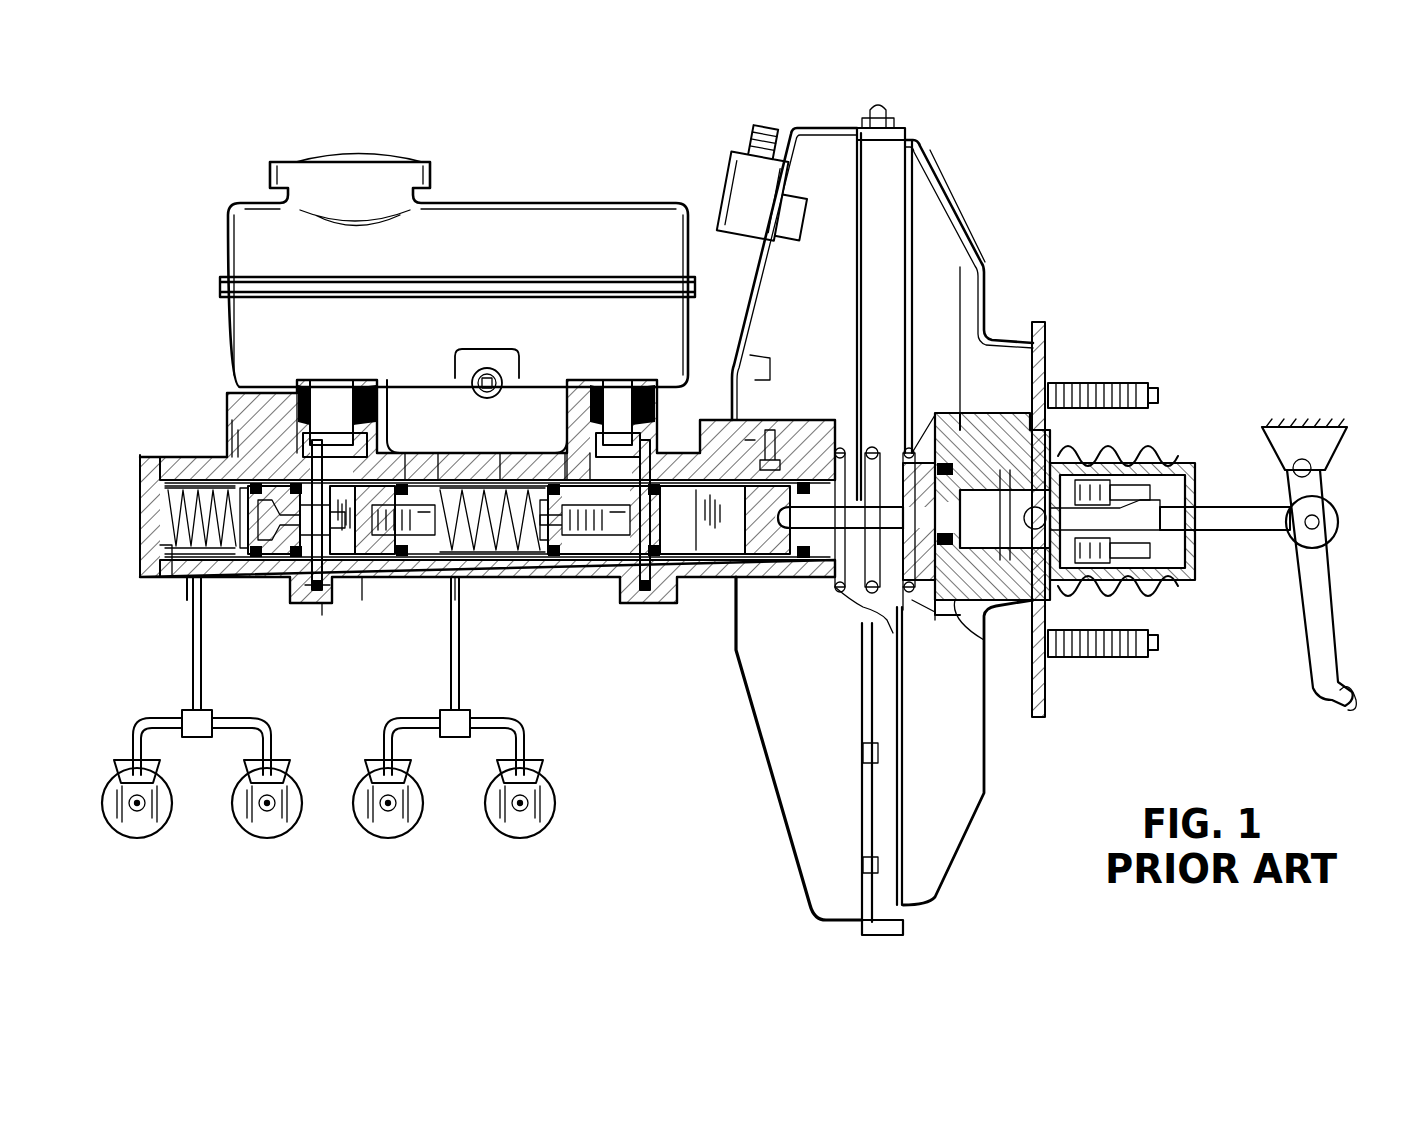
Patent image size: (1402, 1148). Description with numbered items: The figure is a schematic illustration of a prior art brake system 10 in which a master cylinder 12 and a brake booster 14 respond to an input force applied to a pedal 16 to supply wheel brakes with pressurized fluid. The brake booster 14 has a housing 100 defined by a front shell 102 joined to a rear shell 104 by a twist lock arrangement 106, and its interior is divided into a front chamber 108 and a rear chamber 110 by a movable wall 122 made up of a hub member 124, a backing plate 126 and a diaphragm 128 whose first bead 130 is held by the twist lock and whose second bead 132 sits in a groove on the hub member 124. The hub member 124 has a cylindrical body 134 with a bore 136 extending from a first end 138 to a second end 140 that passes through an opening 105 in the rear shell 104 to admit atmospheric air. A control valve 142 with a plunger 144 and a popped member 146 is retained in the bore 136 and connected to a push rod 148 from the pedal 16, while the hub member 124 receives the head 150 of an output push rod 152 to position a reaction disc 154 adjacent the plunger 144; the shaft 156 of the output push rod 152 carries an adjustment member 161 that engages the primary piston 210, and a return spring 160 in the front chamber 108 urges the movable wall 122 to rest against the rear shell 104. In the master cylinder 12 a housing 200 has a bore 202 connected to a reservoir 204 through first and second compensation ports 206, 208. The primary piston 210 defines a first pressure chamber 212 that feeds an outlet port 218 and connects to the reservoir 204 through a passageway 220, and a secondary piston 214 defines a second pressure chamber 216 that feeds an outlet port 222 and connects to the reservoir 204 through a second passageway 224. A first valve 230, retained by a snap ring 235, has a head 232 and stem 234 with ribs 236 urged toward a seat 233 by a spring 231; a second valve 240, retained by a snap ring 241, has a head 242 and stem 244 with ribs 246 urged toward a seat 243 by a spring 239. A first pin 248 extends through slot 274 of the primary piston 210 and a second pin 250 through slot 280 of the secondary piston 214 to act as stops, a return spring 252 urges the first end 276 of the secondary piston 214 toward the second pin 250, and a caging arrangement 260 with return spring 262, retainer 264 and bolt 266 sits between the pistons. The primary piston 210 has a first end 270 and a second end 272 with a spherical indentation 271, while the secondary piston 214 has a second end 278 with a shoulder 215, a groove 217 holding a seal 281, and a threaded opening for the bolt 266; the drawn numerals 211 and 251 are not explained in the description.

The brake system 10 is at (415, 850).
The master cylinder 12 is at (128, 373).
The brake booster 14 is at (1136, 252).
The pedal 16 is at (1318, 577).
The housing 100 is at (886, 514).
The front shell 102 is at (778, 128).
The rear shell 104 is at (957, 187).
The opening 105 is at (1092, 442).
The twist lock arrangement 106 is at (850, 107).
The front chamber 108 is at (790, 305).
The rear chamber 110 is at (978, 283).
The movable wall 122 is at (855, 256).
The hub member 124 is at (949, 638).
The backing plate 126 is at (972, 669).
The diaphragm 128 is at (895, 133).
The first bead 130 is at (893, 125).
The second bead 132 is at (1030, 689).
The cylindrical body 134 is at (1147, 463).
The bore 136 is at (1100, 560).
The first end 138 is at (910, 658).
The second end 140 is at (1193, 463).
The control valve 142 is at (1160, 597).
The plunger 144 is at (1036, 440).
The popped member 146 is at (1178, 462).
The push rod 148 is at (1257, 530).
The head 150 is at (925, 430).
The output push rod 152 is at (858, 462).
The reaction disc 154 is at (906, 615).
The shaft 156 is at (809, 560).
The return spring 160 is at (790, 450).
The adjustment member 161 is at (762, 568).
The housing 200 is at (392, 578).
The bore 202 is at (590, 578).
The reservoir 204 is at (243, 322).
The first compensation port 206 is at (690, 428).
The second compensation port 208 is at (382, 398).
The primary piston 210 is at (740, 580).
The primary piston 211 is at (655, 500).
The first pressure chamber 212 is at (488, 662).
The secondary piston 214 is at (362, 580).
The shoulder 215 is at (428, 580).
The second pressure chamber 216 is at (210, 660).
The groove 217 is at (440, 590).
The outlet port 218 is at (462, 580).
The passageway 220 is at (646, 600).
The outlet port 222 is at (187, 578).
The second passageway 224 is at (237, 437).
The first valve 230 is at (562, 517).
The spring 231 is at (583, 562).
The head 232 is at (603, 565).
The seat 233 is at (612, 580).
The stem 234 is at (660, 521).
The snap ring 235 is at (567, 453).
The ribs 236 is at (660, 565).
The spring 239 is at (190, 487).
The second valve 240 is at (222, 508).
The snap ring 241 is at (172, 585).
The head 242 is at (288, 560).
The seat 243 is at (247, 490).
The stem 244 is at (322, 605).
The ribs 246 is at (235, 425).
The first pin 248 is at (700, 560).
The second pin 250 is at (325, 603).
The reservoir grommet 251 is at (325, 388).
The return spring 252 is at (250, 535).
The caging arrangement 260 is at (445, 580).
The return spring 262 is at (553, 467).
The retainer 264 is at (535, 585).
The bolt 266 is at (502, 462).
The first end 270 is at (630, 440).
The spherical indentation 271 is at (778, 628).
The second end 272 is at (843, 447).
The slot 274 is at (768, 455).
The first end 276 is at (312, 588).
The second end 278 is at (407, 455).
The slot 280 is at (334, 491).
The seal 281 is at (438, 445).